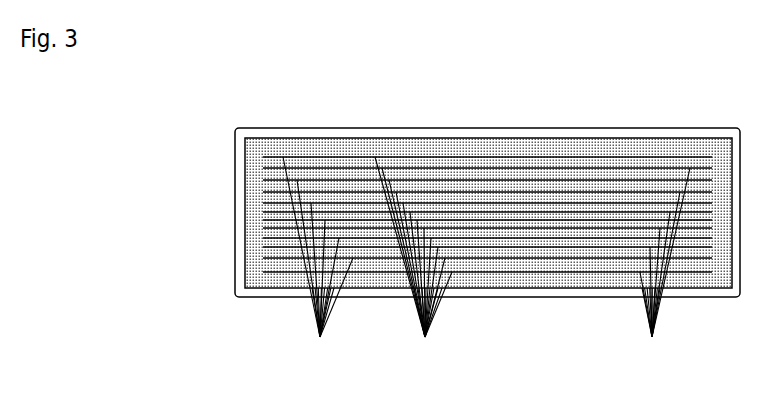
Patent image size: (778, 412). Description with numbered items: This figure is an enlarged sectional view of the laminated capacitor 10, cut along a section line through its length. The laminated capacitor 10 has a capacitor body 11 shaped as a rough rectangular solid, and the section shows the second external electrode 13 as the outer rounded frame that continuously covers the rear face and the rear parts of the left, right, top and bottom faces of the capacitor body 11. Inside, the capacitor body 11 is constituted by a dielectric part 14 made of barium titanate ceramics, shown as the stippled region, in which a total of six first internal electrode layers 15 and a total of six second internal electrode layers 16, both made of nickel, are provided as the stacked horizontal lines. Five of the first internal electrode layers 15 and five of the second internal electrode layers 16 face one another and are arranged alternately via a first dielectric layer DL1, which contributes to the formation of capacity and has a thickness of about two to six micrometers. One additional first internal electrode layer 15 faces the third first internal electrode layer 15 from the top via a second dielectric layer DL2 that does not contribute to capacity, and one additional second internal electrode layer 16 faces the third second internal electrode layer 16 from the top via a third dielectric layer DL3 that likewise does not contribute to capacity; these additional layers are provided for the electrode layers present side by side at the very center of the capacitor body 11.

The laminated capacitor 10 is at (487, 218).
The capacitor body 11 is at (448, 138).
The second external electrode 13 is at (602, 128).
The dielectric part 14 is at (522, 150).
The first internal electrode layers 15 is at (318, 262).
The second internal electrode layers 16 is at (665, 267).
The first dielectric layer DL1 is at (413, 262).
The second dielectric layer DL2 is at (548, 206).
The third dielectric layer DL3 is at (603, 230).